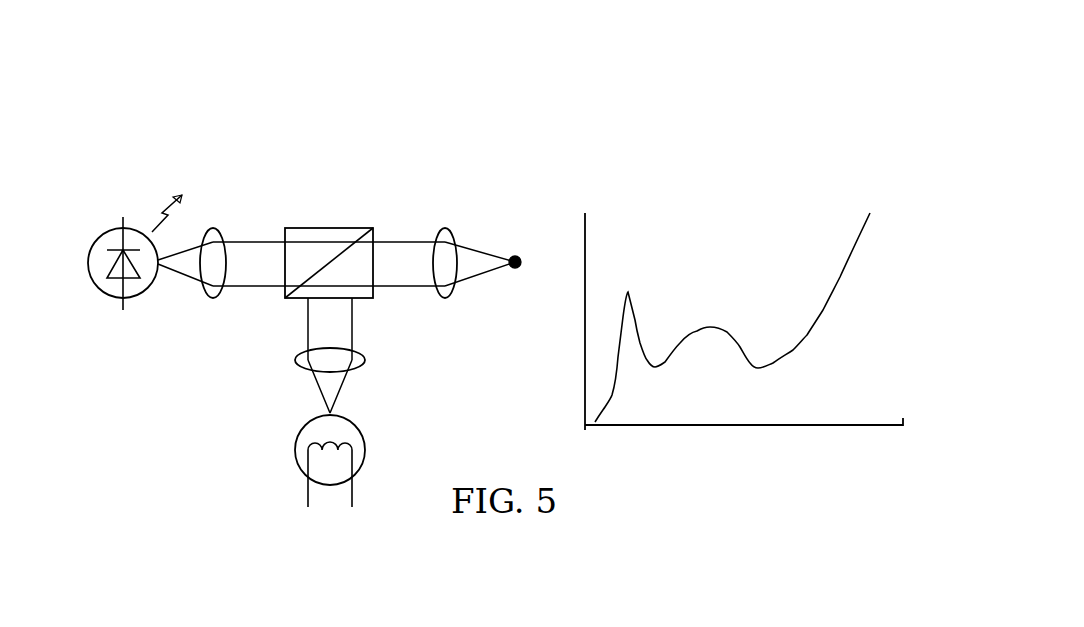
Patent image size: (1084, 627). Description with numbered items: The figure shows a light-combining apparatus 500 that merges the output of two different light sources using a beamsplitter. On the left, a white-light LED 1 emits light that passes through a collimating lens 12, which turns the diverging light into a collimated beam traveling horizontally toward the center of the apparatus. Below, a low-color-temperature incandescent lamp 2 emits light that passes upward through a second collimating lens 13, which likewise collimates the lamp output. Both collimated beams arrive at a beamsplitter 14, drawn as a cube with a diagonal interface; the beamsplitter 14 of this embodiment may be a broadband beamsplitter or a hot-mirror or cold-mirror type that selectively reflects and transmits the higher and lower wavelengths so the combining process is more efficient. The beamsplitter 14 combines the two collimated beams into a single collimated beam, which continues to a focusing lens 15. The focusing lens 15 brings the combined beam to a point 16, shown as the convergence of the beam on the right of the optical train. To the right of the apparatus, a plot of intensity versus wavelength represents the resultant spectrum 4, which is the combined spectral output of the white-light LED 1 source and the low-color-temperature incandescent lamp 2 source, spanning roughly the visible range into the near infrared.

The light-combining apparatus 500 is at (548, 127).
The white-light LED 1 is at (104, 298).
The low-color-temperature incandescent lamp 2 is at (297, 462).
The resultant spectrum 4 is at (560, 185).
The collimating lens 12 is at (215, 230).
The collimating lens 13 is at (365, 358).
The beamsplitter 14 is at (318, 228).
The focusing lens 15 is at (445, 230).
The point 16 is at (517, 257).